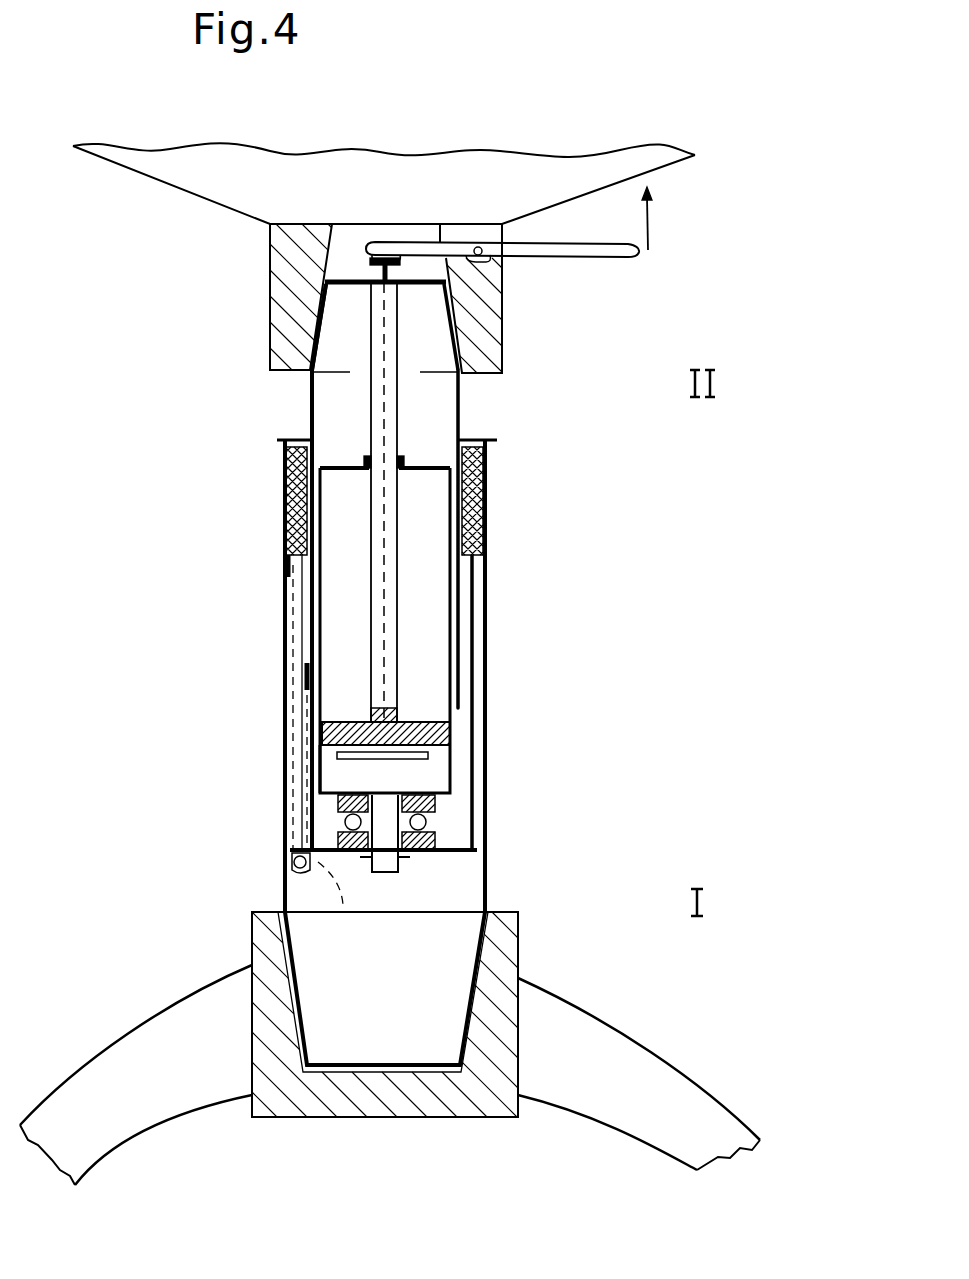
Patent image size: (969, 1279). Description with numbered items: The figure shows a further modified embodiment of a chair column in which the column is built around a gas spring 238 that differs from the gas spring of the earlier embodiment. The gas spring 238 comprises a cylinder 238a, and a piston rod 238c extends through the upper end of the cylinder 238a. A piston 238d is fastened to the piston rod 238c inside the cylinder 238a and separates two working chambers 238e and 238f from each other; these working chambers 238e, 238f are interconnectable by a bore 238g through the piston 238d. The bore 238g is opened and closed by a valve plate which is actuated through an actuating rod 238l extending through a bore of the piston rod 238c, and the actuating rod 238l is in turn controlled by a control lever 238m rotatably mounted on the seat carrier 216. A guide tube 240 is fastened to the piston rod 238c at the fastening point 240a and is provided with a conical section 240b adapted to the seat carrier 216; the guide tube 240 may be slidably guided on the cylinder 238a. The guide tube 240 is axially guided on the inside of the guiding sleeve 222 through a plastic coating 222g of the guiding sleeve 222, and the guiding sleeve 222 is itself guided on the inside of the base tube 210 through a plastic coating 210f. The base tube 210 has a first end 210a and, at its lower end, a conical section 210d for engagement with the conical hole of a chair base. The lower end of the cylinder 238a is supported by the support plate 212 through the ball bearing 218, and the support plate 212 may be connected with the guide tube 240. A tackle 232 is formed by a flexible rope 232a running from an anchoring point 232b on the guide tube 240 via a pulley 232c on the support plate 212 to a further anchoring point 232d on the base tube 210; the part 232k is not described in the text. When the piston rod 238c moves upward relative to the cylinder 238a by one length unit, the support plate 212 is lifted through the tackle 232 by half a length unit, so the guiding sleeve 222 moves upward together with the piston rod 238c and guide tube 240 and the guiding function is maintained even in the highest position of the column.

The base tube 210 is at (490, 685).
The first end of base tube 210a is at (443, 1067).
The conical section 210d is at (467, 990).
The plastic coating 210f is at (490, 495).
The support plate 212 is at (453, 857).
The seat carrier 216 is at (490, 318).
The ball bearing 218 is at (433, 820).
The guiding sleeve 222 is at (478, 605).
The plastic coating 222g is at (300, 440).
The tackle 232 is at (272, 753).
The flexible rope 232a is at (343, 905).
The anchoring point 232b is at (300, 658).
The pulley 232c is at (303, 870).
The further anchoring point 232d is at (287, 563).
The pawl edge 232k is at (335, 770).
The gas spring 238 is at (335, 592).
The cylinder 238a is at (435, 772).
The piston rod 238c is at (397, 418).
The piston 238d is at (455, 731).
The working chamber 238e is at (440, 805).
The working chamber 238f is at (432, 640).
The bore 238g is at (322, 707).
The actuating rod 238l is at (396, 578).
The control lever 238m is at (622, 254).
The guide tube 240 is at (462, 383).
The fastening point of guide tube 240a is at (365, 293).
The conical section 240b is at (328, 331).